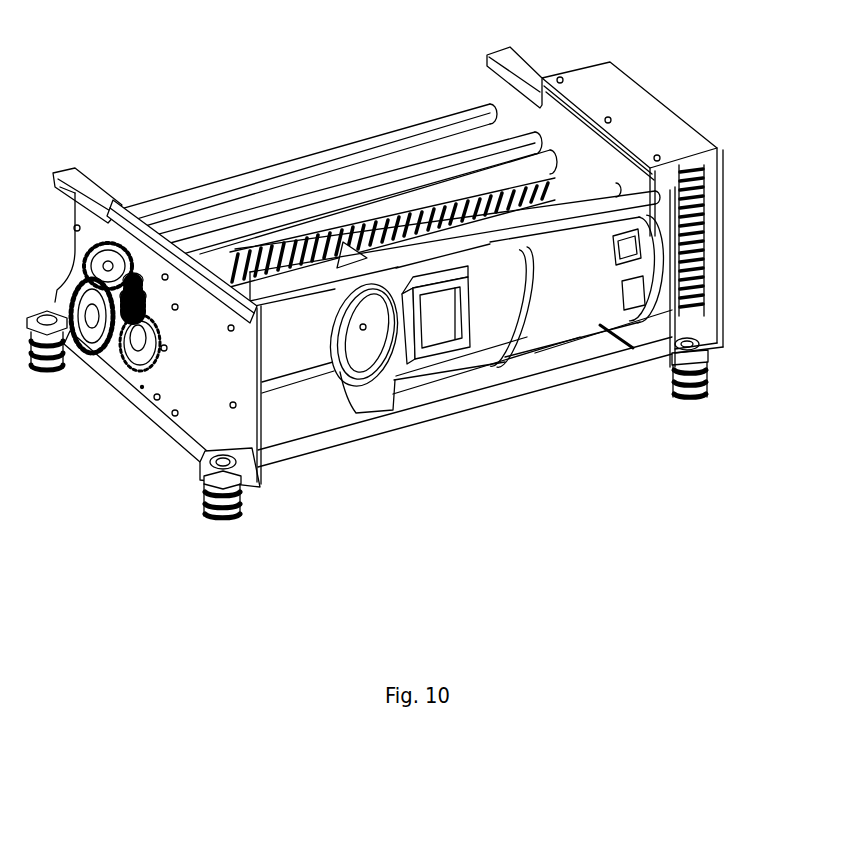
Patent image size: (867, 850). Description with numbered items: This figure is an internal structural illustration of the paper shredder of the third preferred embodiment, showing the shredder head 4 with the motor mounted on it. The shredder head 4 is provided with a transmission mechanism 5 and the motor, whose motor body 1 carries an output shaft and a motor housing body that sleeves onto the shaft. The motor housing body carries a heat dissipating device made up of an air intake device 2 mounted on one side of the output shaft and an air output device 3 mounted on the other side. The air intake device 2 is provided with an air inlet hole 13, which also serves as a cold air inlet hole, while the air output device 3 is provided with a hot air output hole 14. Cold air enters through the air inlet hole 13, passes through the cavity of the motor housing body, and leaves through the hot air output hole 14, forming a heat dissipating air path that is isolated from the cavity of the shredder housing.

The motor body 1 is at (583, 340).
The air intake device 2 is at (650, 322).
The air output device 3 is at (363, 400).
The shredder head 4 is at (343, 232).
The transmission mechanism 5 is at (703, 226).
The air inlet hole 13 is at (645, 295).
The hot air output hole 14 is at (435, 338).